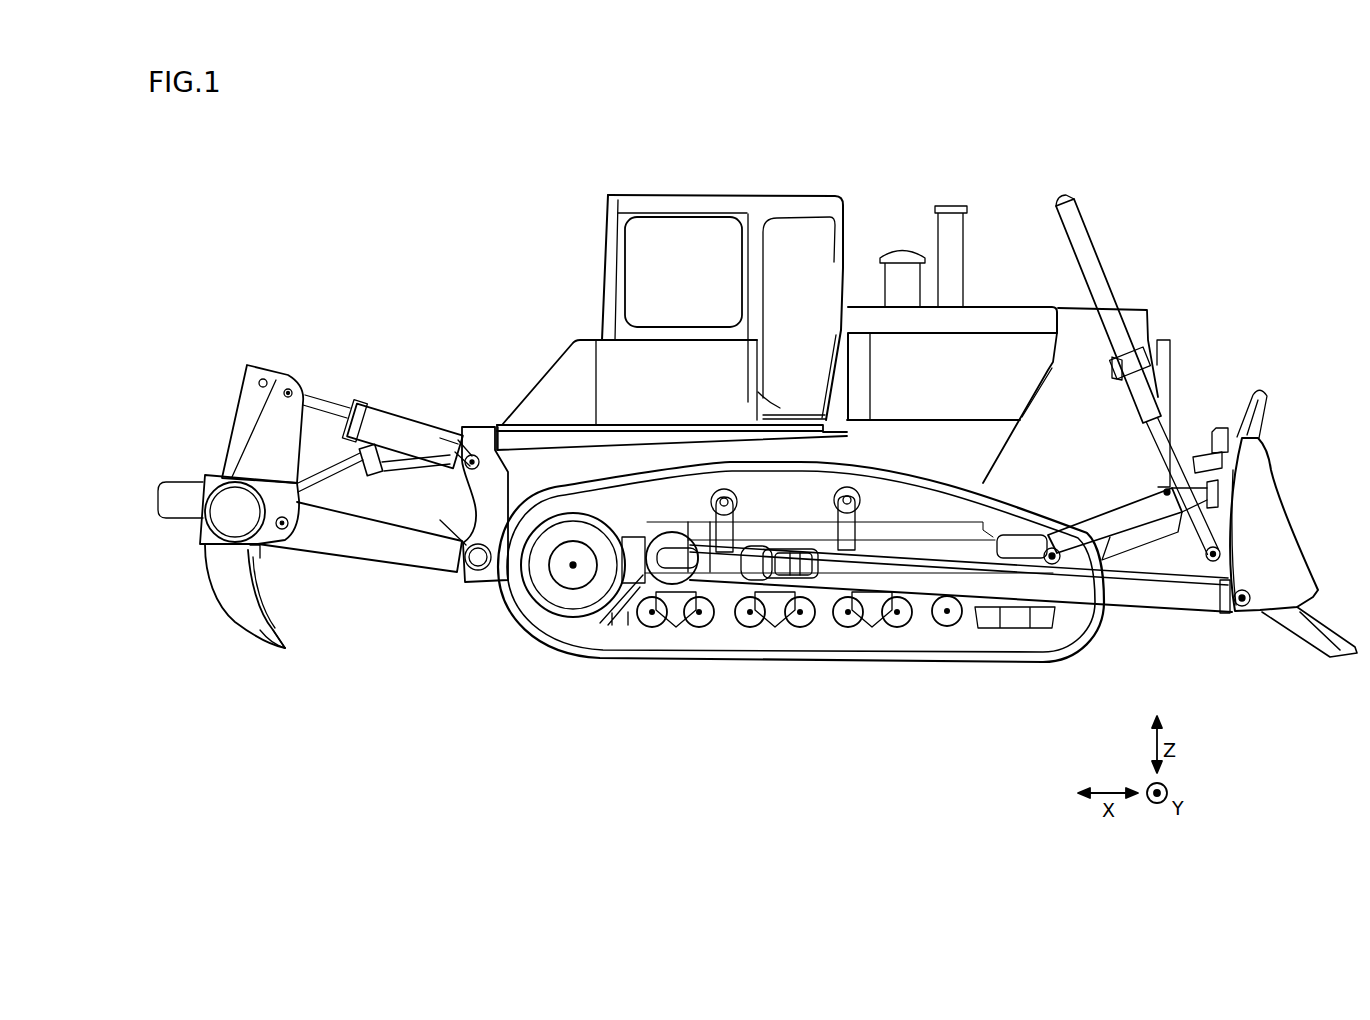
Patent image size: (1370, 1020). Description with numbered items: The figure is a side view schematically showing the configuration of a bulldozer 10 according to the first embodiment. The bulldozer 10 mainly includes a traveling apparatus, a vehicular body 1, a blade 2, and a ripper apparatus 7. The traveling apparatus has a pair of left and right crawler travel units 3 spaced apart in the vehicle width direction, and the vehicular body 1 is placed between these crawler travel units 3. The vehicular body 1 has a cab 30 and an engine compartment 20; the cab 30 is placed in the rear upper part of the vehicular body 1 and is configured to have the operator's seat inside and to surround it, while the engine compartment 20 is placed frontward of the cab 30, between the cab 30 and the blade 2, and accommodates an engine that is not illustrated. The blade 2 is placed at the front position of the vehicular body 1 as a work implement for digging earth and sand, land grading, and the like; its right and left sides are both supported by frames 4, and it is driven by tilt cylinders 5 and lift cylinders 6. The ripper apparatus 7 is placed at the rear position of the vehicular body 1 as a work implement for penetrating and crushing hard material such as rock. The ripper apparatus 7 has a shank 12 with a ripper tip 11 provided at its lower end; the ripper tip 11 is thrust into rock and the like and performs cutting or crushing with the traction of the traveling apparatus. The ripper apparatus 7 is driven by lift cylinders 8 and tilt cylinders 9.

The bulldozer 10 is at (646, 158).
The vehicular body 1 is at (996, 357).
The blade 2 is at (1257, 496).
The crawler travel unit 3 is at (781, 658).
The frame 4 is at (1120, 592).
The tilt cylinder 5 is at (1143, 522).
The lift cylinder 6 is at (1070, 210).
The ripper apparatus 7 is at (346, 389).
The lift cylinder 8 is at (377, 478).
The tilt cylinder 9 is at (407, 435).
The ripper tip 11 is at (285, 650).
The shank 12 is at (227, 589).
The engine compartment 20 is at (878, 358).
The cab 30 is at (743, 230).